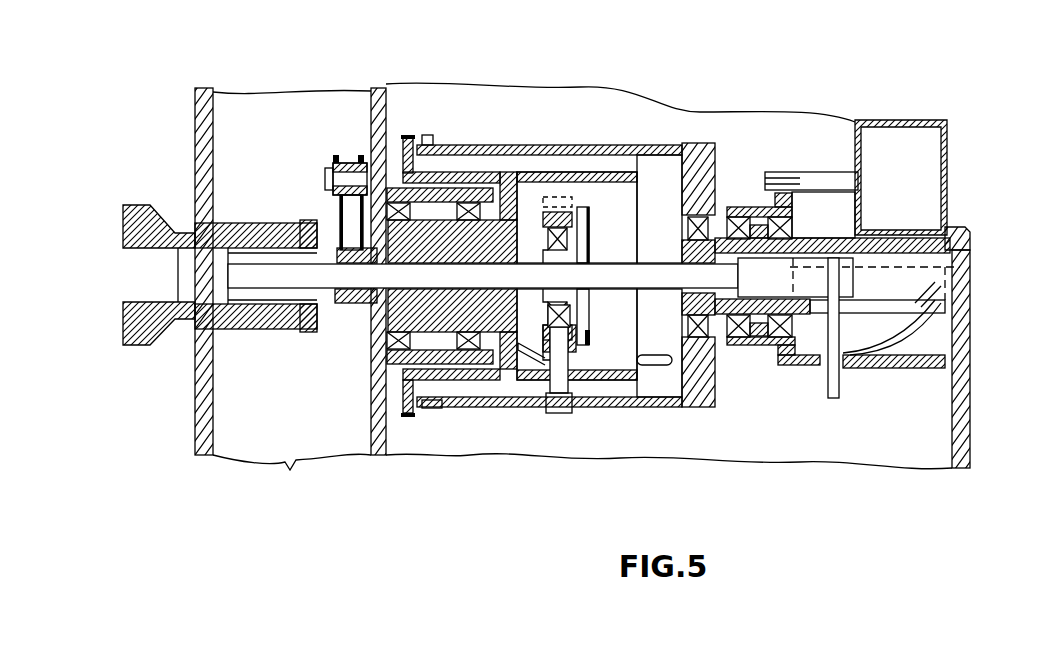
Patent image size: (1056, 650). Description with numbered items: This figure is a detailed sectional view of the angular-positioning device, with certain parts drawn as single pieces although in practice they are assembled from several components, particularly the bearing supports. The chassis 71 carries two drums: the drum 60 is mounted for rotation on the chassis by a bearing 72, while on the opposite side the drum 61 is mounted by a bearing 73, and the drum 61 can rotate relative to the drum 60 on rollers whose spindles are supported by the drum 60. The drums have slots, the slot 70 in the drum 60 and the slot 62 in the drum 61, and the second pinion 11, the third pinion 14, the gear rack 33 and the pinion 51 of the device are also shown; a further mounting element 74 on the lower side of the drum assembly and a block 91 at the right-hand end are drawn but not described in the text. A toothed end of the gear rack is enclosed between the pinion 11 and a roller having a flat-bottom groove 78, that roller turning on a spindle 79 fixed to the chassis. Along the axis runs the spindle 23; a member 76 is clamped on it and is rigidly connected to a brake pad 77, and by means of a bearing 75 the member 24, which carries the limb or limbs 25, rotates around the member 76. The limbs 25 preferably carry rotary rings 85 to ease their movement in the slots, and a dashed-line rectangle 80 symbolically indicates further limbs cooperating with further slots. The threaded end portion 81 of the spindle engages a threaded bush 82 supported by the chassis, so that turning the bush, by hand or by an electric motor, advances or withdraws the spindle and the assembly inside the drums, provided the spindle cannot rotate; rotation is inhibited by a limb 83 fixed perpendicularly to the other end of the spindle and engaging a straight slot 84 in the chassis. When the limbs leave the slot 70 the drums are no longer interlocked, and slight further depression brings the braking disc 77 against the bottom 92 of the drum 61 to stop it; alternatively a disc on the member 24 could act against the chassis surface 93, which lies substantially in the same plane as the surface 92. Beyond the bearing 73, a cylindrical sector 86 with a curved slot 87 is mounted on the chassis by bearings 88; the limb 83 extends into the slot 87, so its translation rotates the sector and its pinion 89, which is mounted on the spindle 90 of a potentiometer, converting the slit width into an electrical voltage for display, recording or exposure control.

The second pinion 11 is at (342, 304).
The third pinion 14 is at (428, 135).
The spindle 23 is at (327, 282).
The member 24 is at (568, 350).
The limb 25 is at (563, 413).
The gear rack 33 is at (340, 218).
The pinion 51 is at (408, 137).
The drum 60 is at (471, 172).
The drum 61 is at (512, 145).
The slot 62 is at (656, 365).
The slot 70 is at (535, 357).
The chassis 71 is at (213, 438).
The bearing 72 is at (413, 336).
The bearing 73 is at (702, 220).
The post 74 is at (432, 395).
The bearing 75 is at (568, 233).
The member 76 is at (568, 300).
The brake pad 77 is at (591, 336).
The flat-bottom groove 78 is at (352, 157).
The spindle 79 is at (324, 180).
The dashed-line rectangle 80 is at (566, 203).
The end portion 81 is at (198, 286).
The threaded bush 82 is at (146, 215).
The limb 83 is at (838, 389).
The straight slot 84 is at (864, 306).
The rotary ring 85 is at (553, 378).
The cylindrical sector 86 is at (922, 368).
The curved slot 87 is at (948, 342).
The bearings 88 is at (790, 231).
The pinion 89 is at (788, 364).
The spindle of potentiometer 90 is at (830, 182).
The block 91 is at (937, 175).
The bottom of drum 92 is at (680, 213).
The surface of chassis 93 is at (683, 301).